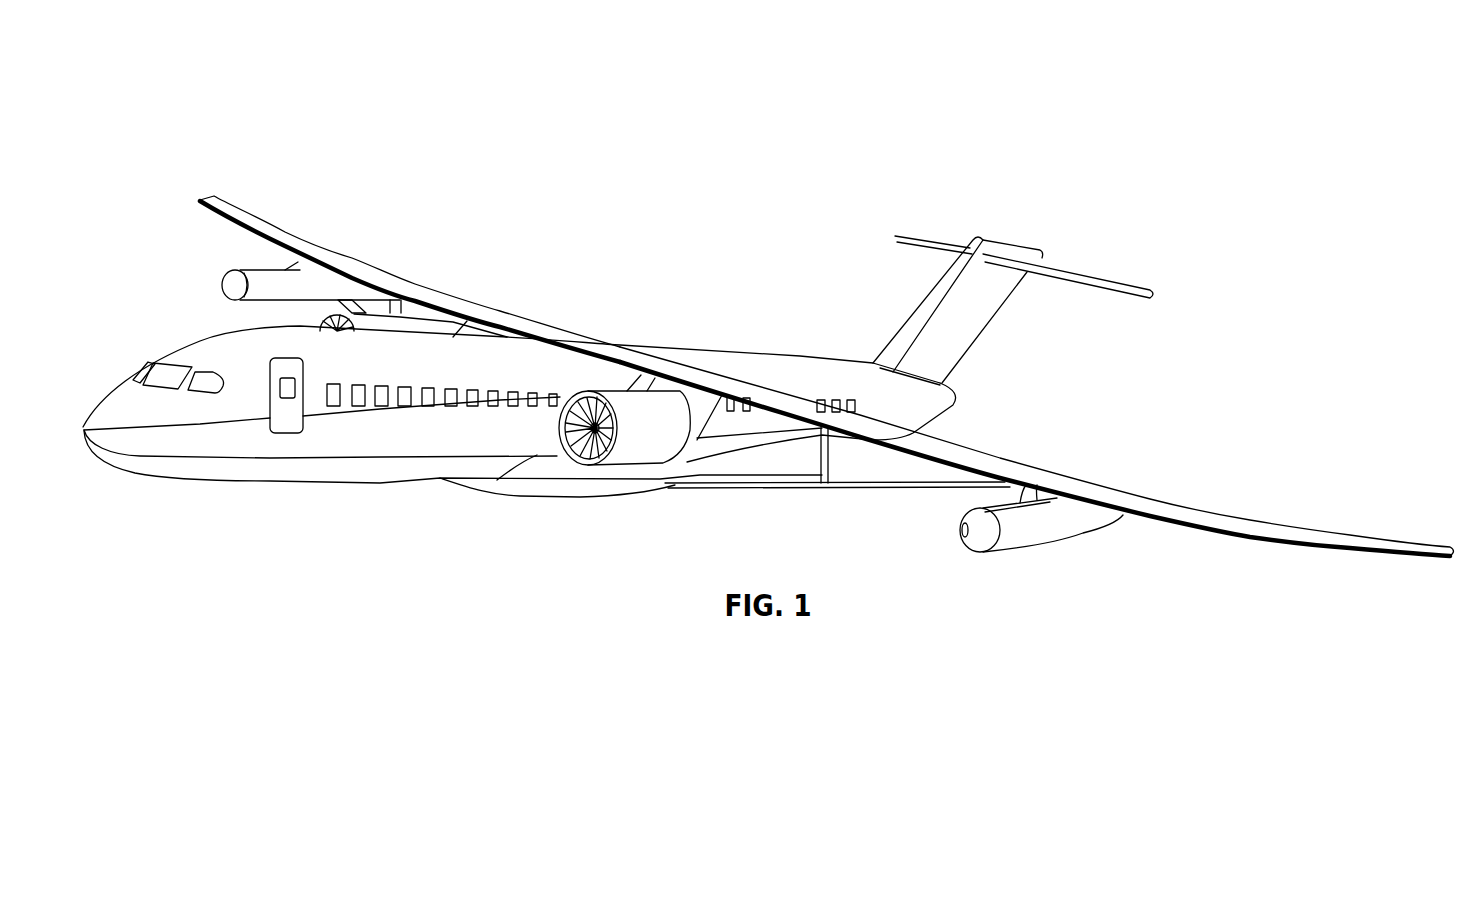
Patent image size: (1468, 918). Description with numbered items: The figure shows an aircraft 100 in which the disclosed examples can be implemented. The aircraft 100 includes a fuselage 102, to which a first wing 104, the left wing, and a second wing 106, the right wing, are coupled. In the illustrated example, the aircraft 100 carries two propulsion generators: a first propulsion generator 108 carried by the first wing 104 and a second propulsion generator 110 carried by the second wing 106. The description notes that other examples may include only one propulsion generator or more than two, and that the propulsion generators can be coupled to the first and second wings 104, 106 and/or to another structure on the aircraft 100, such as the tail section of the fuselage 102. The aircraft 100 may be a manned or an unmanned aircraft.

The aircraft 100 is at (258, 68).
The fuselage 102 is at (210, 343).
The first wing 104 is at (1023, 475).
The second wing 106 is at (350, 273).
The first propulsion generator 108 is at (637, 420).
The second propulsion generator 110 is at (407, 327).